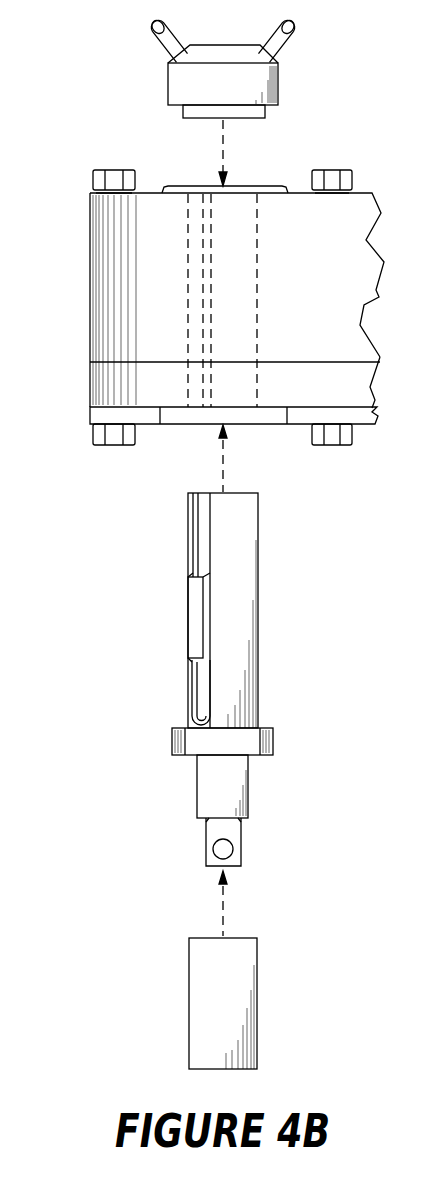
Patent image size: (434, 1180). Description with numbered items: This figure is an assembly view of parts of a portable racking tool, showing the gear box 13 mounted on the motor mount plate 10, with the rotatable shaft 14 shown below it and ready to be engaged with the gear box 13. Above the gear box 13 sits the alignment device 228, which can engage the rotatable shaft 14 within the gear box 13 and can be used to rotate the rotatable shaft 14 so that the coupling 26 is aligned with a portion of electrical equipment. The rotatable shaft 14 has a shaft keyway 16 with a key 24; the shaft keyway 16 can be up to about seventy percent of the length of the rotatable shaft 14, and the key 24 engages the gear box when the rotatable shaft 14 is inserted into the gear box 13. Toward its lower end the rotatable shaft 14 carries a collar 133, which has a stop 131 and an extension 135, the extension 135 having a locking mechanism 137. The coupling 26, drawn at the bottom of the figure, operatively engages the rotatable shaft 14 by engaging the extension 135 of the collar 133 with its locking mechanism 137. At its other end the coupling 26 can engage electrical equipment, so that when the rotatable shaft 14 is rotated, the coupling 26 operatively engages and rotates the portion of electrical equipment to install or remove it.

The alignment device 228 is at (182, 81).
The gear box 13 is at (117, 300).
The motor mount plate 10 is at (93, 414).
The rotatable shaft 14 is at (287, 593).
The key 24 is at (193, 617).
The shaft keyway 16 is at (205, 683).
The stop 131 is at (252, 740).
The collar 133 is at (210, 792).
The extension 135 is at (207, 865).
The locking mechanism 137 is at (225, 849).
The coupling 26 is at (205, 990).